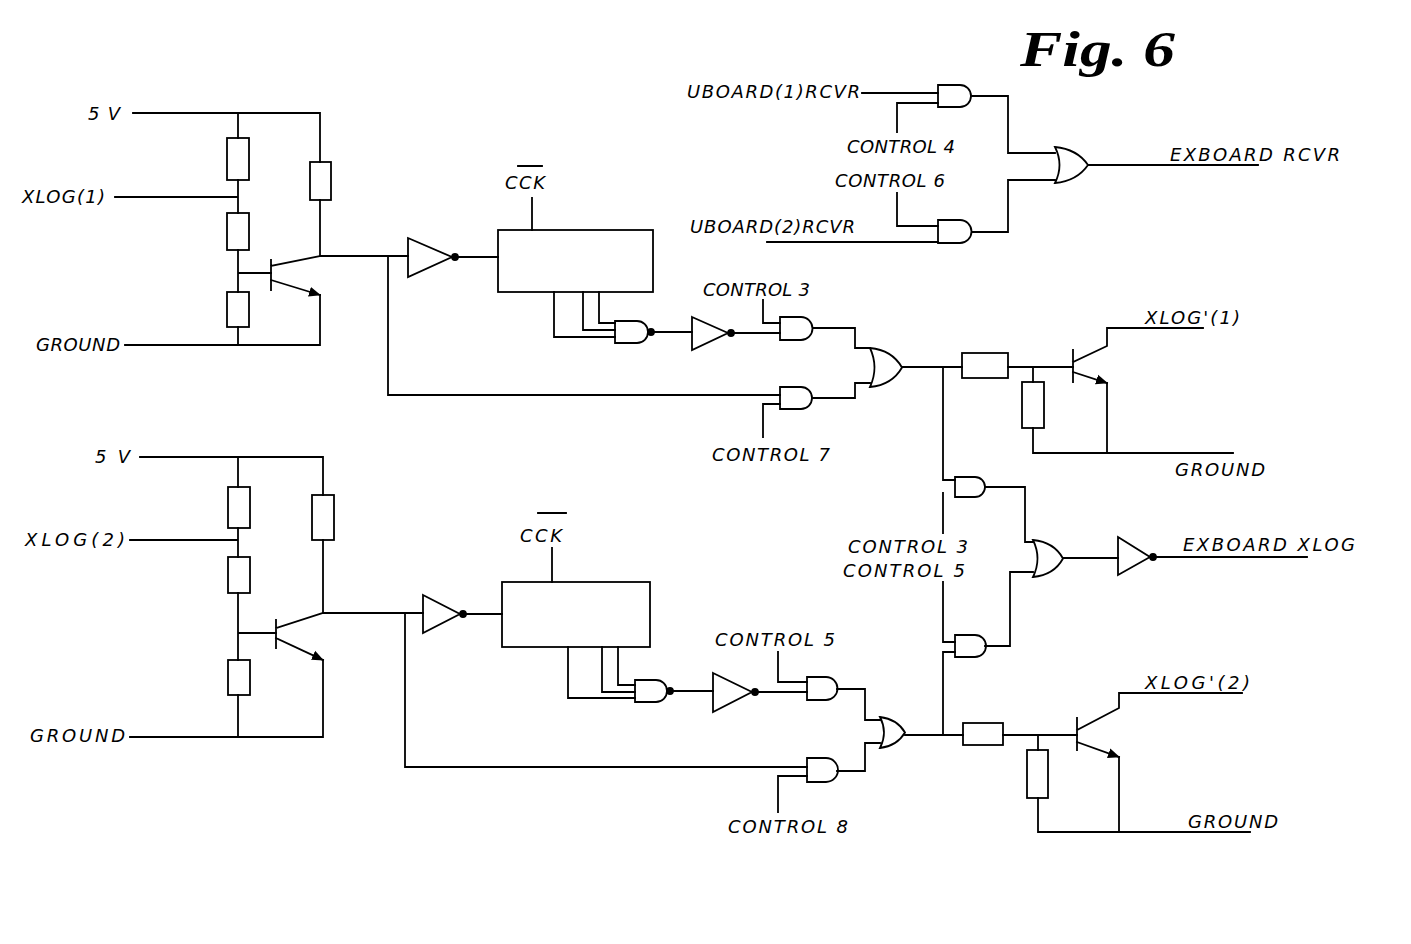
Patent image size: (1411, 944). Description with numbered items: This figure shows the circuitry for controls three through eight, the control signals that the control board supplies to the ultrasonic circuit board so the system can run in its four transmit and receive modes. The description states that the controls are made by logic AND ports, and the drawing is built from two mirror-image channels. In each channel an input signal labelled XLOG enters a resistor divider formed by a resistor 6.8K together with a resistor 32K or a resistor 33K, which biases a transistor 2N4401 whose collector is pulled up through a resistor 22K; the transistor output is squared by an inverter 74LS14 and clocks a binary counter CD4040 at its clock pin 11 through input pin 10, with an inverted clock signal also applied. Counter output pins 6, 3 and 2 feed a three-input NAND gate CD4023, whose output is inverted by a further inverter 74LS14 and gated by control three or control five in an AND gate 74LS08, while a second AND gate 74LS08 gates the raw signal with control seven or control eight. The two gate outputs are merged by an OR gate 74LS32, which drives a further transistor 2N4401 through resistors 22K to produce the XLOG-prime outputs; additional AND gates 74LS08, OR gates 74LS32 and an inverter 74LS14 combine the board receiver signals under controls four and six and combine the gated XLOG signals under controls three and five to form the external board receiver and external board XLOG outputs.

The 6.8K resistor 6.8K is at (209, 333).
The 32K resistor 32K is at (209, 231).
The 33K resistor 33K is at (206, 493).
The 22K resistor 22K is at (680, 480).
The 2N4401 transistor 2N4401 is at (756, 506).
The 74LS14 inverter 74LS14 is at (804, 491).
The 74LS08 AND gate 74LS08 is at (900, 446).
The 74LS32 OR gate 74LS32 is at (997, 461).
The CD4040 counter CD4040 is at (575, 438).
The CD4023 NAND gate CD4023 is at (624, 525).
The counter clock pin 11 is at (543, 404).
The counter pin 10 is at (492, 442).
The counter output pin 6 is at (591, 487).
The counter output pin 3 is at (606, 484).
The counter output pin 2 is at (615, 481).